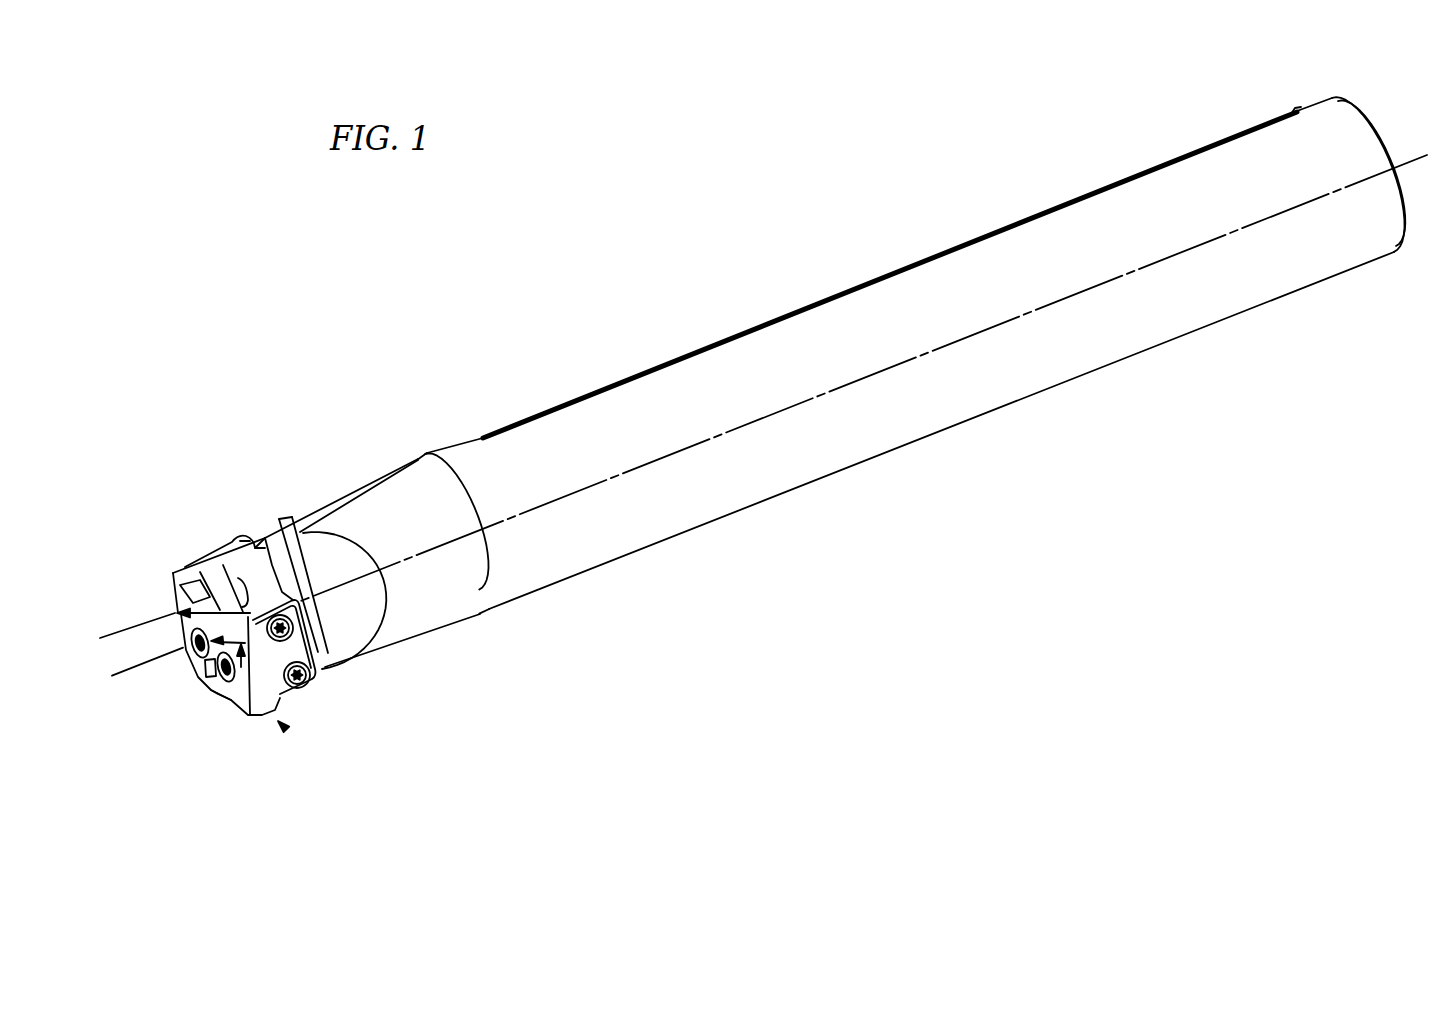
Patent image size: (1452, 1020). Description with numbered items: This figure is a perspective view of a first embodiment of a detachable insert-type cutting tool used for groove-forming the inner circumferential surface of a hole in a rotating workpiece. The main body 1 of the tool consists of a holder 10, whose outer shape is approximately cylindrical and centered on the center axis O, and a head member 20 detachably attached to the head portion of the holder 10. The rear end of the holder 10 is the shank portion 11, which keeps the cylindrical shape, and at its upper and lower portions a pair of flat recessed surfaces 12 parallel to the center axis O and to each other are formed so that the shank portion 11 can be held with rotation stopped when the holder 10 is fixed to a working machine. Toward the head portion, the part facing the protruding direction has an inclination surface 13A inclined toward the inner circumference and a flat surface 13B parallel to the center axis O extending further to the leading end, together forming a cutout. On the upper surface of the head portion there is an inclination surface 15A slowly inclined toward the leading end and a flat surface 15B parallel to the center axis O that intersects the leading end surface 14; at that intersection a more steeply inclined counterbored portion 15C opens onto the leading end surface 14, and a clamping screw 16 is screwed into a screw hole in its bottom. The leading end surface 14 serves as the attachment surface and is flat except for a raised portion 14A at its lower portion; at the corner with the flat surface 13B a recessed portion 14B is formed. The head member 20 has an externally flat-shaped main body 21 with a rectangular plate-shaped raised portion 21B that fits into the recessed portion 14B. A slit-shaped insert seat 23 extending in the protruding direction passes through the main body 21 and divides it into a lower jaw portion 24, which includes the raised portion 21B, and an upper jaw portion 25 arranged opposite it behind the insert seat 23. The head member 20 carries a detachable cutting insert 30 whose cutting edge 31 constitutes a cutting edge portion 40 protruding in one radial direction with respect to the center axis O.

The main body 1 is at (607, 267).
The holder 10 is at (760, 293).
The shank portion 11 is at (882, 423).
The flat recessed surfaces 12 is at (693, 353).
The inclination surface 13A is at (370, 607).
The flat surface 13B is at (273, 572).
The leading end surface 14 is at (218, 583).
The raised portion 14A is at (228, 710).
The recessed portion 14B is at (327, 640).
The inclination surface 15A is at (338, 503).
The flat surface 15B is at (265, 547).
The counterbored portion 15C is at (247, 520).
The clamping screw 16 is at (232, 553).
The head member 20 is at (284, 745).
The main body 21 is at (254, 702).
The raised portion 21B is at (314, 689).
The insert seat 23 is at (231, 707).
The lower jaw portion 24 is at (287, 729).
The upper jaw portion 25 is at (207, 562).
The cutting insert 30 is at (178, 612).
The cutting edge 31 is at (293, 577).
The cutting edge portion 40 is at (203, 663).
The center axis O is at (1077, 294).